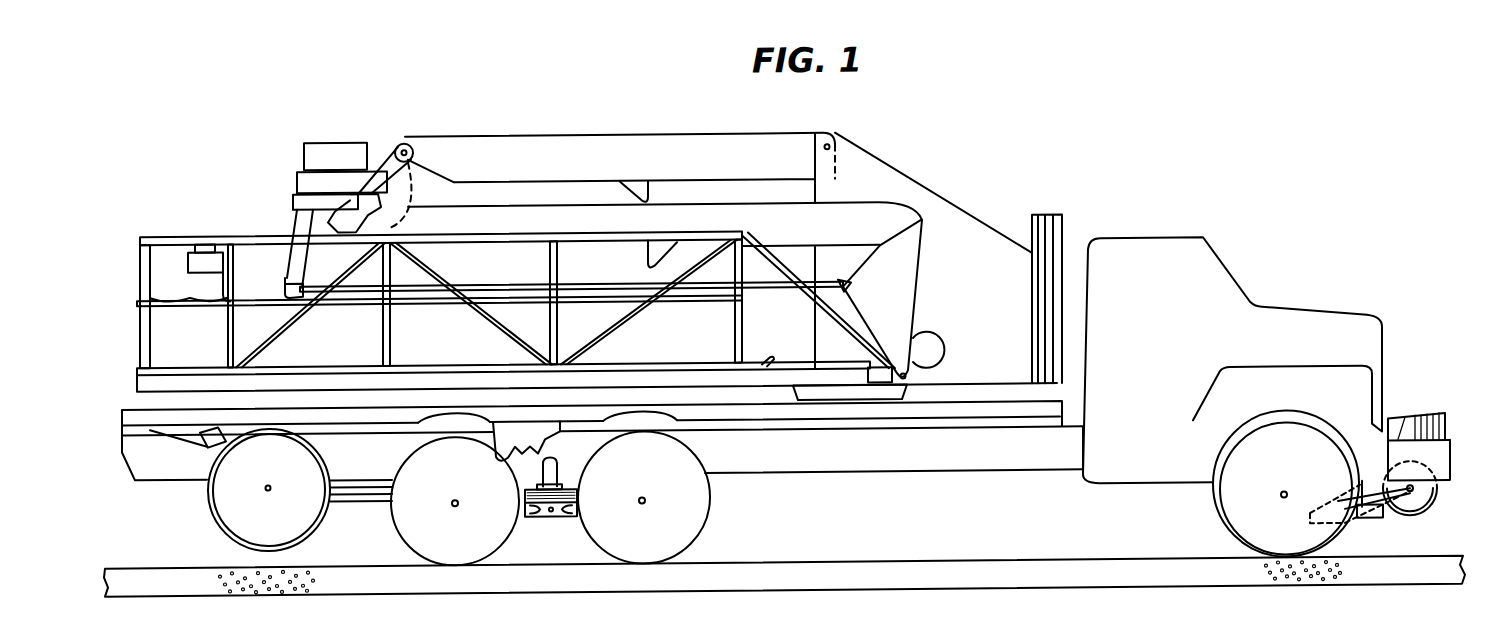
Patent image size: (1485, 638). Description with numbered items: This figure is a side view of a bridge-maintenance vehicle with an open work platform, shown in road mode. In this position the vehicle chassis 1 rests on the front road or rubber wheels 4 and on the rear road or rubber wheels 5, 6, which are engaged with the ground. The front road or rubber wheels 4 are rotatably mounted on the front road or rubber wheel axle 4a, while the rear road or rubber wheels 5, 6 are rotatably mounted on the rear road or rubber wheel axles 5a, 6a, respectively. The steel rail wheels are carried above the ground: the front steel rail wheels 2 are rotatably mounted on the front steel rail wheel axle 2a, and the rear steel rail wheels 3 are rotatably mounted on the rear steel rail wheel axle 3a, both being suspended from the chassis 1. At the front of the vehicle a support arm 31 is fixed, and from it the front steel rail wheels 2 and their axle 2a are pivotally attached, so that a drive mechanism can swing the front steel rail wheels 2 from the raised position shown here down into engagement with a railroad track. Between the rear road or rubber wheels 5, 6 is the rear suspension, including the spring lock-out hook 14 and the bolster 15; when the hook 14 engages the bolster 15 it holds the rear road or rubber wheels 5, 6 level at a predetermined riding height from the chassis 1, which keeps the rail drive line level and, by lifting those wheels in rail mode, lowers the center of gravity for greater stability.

The vehicle chassis 1 is at (1022, 473).
The front steel rail wheels 2 is at (1424, 520).
The front steel rail wheel axle 2a is at (1413, 495).
The rear steel rail wheels 3 is at (207, 492).
The rear steel rail wheel axle 3a is at (266, 485).
The front road or rubber wheels 4 is at (1234, 541).
The front road or rubber wheel axle 4a is at (1281, 500).
The rear road or rubber wheel 5 is at (692, 545).
The rear road or rubber wheel axle 5a is at (643, 502).
The rear road or rubber wheel 6 is at (423, 553).
The rear road or rubber wheel axle 6a is at (452, 501).
The spring lock-out hook 14 is at (556, 422).
The bolster 15 is at (552, 466).
The support arm 31 is at (1372, 514).